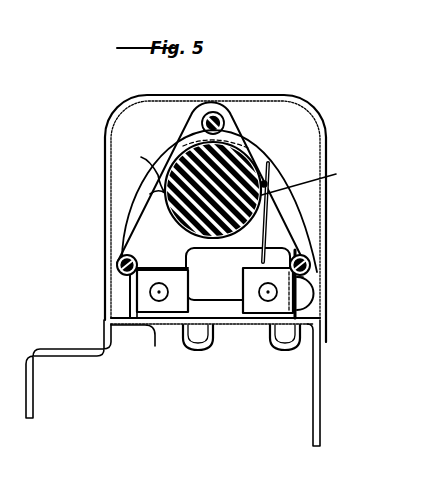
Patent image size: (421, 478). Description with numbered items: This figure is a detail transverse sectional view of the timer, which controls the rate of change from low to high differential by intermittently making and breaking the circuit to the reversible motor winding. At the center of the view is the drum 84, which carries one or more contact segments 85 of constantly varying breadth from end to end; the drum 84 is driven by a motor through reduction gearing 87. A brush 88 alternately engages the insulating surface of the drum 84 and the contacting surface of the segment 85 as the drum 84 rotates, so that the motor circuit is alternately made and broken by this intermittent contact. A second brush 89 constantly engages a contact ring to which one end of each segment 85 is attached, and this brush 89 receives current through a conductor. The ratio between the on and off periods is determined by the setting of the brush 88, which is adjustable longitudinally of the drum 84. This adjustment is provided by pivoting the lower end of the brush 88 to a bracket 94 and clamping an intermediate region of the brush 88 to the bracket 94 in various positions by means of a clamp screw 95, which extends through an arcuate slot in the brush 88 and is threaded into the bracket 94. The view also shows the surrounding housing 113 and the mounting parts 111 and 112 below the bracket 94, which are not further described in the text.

The drum 84 is at (240, 152).
The contact segment 85 is at (336, 175).
The reduction gearing 87 is at (266, 185).
The brush 88 is at (283, 222).
The brush 89 is at (200, 236).
The bracket 94 is at (226, 274).
The clamp screw 95 is at (303, 250).
The mounting bracket 111 is at (154, 336).
The mounting leg 112 is at (33, 397).
The housing 113 is at (105, 187).